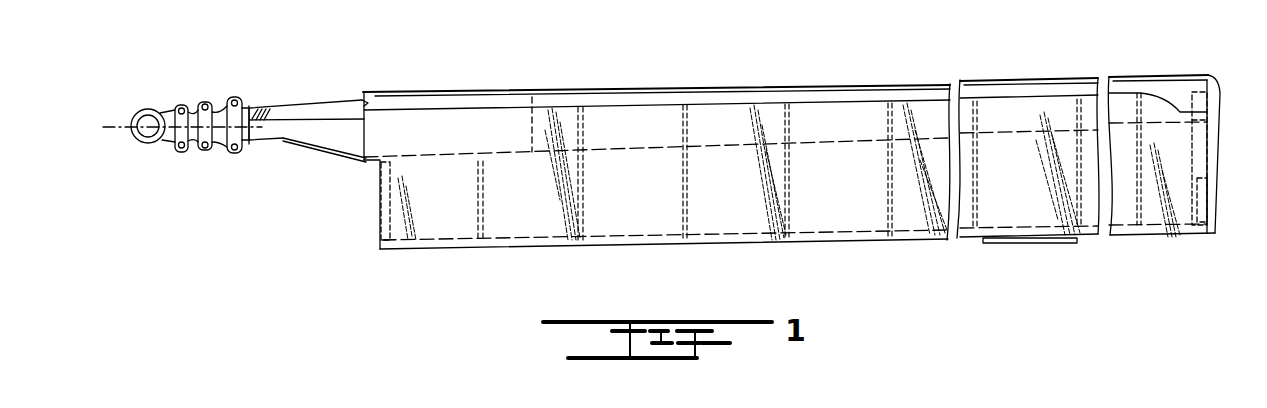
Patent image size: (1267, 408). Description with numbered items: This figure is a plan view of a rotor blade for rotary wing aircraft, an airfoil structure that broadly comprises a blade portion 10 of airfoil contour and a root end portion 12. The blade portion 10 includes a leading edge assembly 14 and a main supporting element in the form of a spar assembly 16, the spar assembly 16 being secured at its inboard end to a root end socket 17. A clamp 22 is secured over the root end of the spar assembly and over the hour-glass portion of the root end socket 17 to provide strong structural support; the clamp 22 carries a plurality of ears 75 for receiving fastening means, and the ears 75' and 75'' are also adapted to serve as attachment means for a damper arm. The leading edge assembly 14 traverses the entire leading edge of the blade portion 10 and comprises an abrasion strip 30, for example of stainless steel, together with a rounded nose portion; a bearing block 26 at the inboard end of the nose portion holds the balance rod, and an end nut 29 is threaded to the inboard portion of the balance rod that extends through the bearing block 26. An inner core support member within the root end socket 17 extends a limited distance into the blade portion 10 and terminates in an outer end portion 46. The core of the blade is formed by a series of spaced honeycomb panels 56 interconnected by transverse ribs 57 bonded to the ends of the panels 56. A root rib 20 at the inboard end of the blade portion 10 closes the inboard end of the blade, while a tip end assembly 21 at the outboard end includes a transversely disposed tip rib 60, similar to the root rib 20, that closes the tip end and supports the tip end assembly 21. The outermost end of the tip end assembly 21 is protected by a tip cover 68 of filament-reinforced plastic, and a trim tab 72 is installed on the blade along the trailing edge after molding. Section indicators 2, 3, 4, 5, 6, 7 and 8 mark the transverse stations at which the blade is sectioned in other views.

The blade portion 10 is at (676, 78).
The root end portion 12 is at (176, 156).
The leading edge assembly 14 is at (740, 81).
The spar assembly 16 is at (279, 156).
The root end socket 17 is at (143, 143).
The root rib 20 is at (384, 223).
The tip end assembly 21 is at (1219, 204).
The clamp 22 is at (196, 100).
The bearing block 26 is at (383, 107).
The end nut 29 is at (363, 100).
The abrasion strip 30 is at (447, 95).
The outer end portion 46 is at (531, 129).
The honeycomb panels 56 is at (443, 231).
The transverse ribs 57 is at (483, 212).
The tip rib 60 is at (1207, 178).
The tip cover 68 is at (1218, 148).
The trim tab 72 is at (1043, 243).
The ears 75 is at (221, 110).
The ear 75' is at (213, 176).
The ear 75'' is at (249, 142).
The section line 2- 2 is at (287, 105).
The section line 3- 3 is at (325, 105).
The section line 4- 4 is at (368, 83).
The section line 5- 5 is at (507, 88).
The section line 6- 6 is at (806, 80).
The section line 7- 7 is at (968, 78).
The section line 8- 8 is at (103, 127).